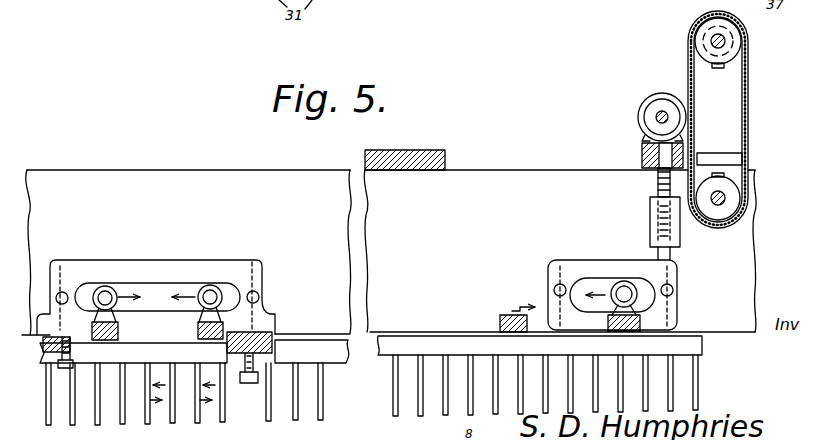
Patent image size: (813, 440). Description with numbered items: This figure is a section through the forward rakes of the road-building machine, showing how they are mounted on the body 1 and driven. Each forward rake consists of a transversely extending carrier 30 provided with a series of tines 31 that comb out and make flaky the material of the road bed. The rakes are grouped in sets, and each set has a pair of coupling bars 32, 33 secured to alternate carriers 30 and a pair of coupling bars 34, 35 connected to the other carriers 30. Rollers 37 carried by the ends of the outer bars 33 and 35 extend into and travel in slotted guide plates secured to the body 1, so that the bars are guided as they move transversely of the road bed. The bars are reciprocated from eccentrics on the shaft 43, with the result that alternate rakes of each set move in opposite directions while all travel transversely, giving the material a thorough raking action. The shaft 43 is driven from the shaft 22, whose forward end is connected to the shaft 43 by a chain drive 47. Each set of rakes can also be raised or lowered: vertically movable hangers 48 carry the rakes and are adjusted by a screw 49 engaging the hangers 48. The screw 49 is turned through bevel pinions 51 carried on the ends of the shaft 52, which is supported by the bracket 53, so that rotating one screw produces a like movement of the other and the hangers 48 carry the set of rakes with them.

The body 1 is at (262, 158).
The shaft 22 is at (726, 41).
The carrier 30 is at (700, 345).
The tines 31 is at (699, 388).
The coupling bar 32 is at (197, 326).
The coupling bar 33 is at (500, 318).
The coupling bar 34 is at (194, 352).
The coupling bar 35 is at (630, 331).
The rollers 37 is at (628, 254).
The shaft 43 is at (726, 198).
The chain drive 47 is at (749, 91).
The hangers 48 is at (650, 228).
The screw 49 is at (657, 184).
The bevel pinions 51 is at (640, 130).
The shaft 52 is at (660, 115).
The bracket 53 is at (642, 150).